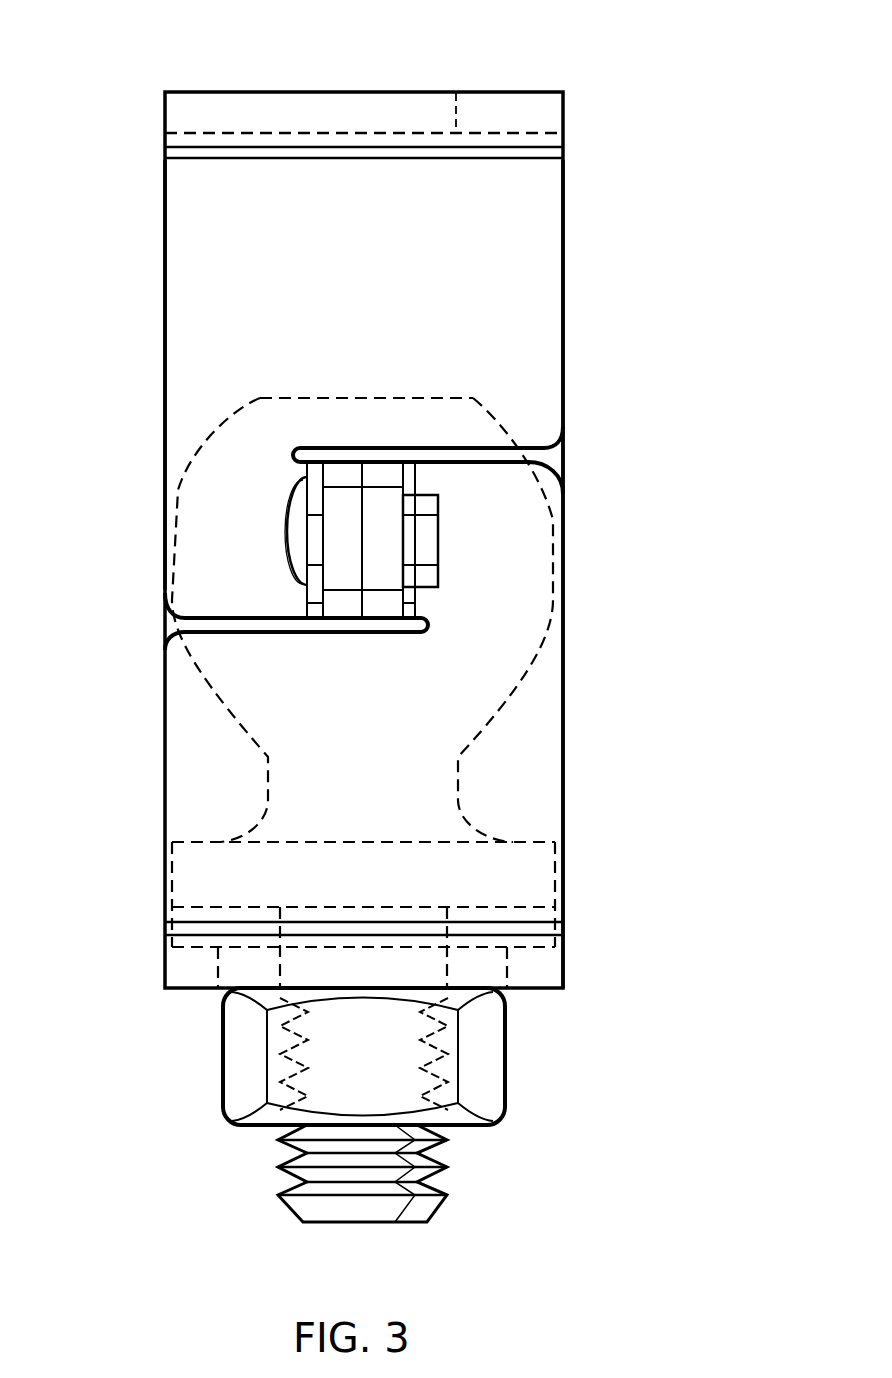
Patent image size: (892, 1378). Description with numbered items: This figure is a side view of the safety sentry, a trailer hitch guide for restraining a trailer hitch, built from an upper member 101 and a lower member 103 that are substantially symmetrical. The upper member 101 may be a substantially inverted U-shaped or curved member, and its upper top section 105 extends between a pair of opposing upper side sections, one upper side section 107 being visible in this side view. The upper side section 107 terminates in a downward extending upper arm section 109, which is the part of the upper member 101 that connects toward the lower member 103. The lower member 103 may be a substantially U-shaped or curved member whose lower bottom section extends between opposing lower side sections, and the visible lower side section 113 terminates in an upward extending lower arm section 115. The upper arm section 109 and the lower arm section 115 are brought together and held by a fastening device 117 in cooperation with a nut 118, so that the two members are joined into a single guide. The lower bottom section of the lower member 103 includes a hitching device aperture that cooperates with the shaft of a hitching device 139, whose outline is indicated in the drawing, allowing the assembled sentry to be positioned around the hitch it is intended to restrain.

The upper member 101 is at (575, 42).
The lower member 103 is at (572, 770).
The upper top section 105 is at (330, 90).
The upper side section 107 is at (178, 243).
The upper arm section 109 is at (383, 603).
The lower side section 113 is at (165, 763).
The lower arm section 115 is at (342, 603).
The fastening device 117 is at (290, 543).
The nut 118 is at (440, 572).
The hitching device 139 is at (341, 398).